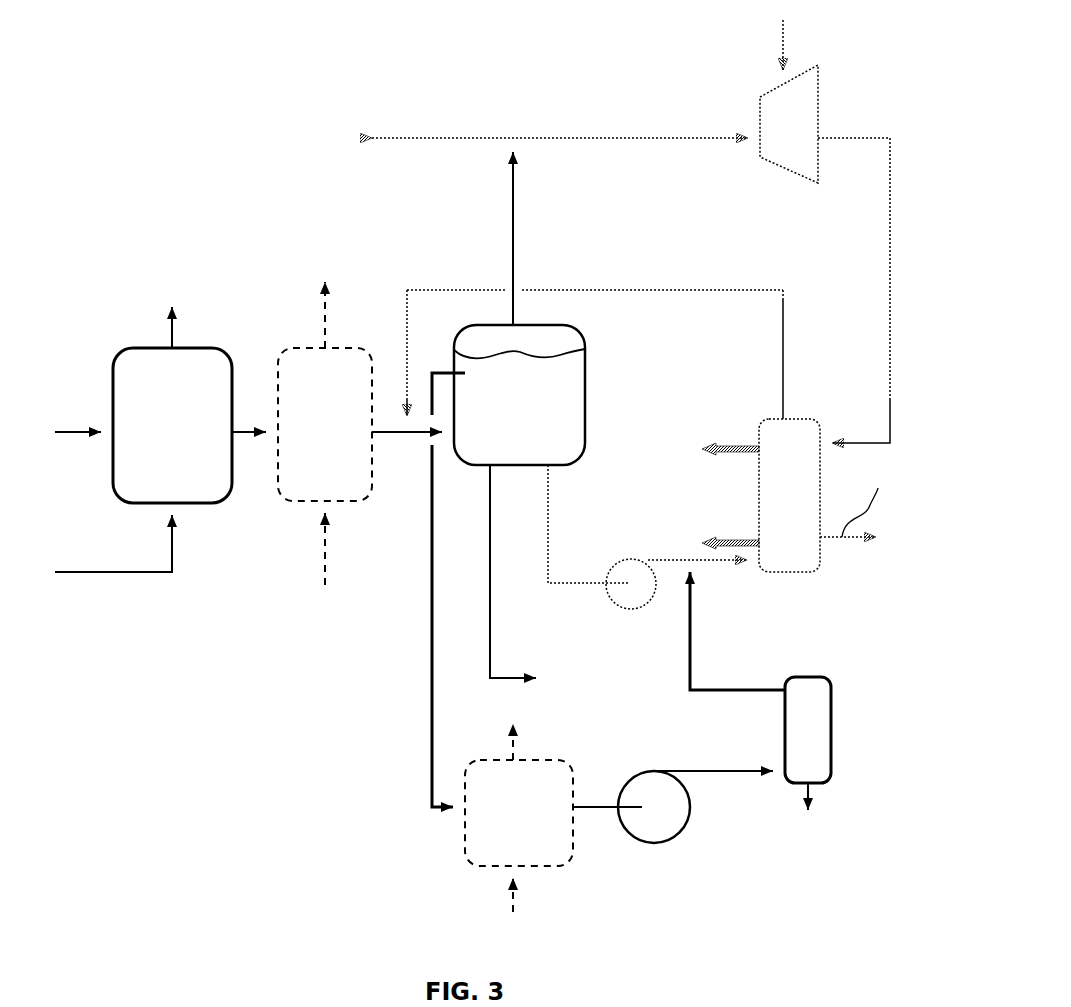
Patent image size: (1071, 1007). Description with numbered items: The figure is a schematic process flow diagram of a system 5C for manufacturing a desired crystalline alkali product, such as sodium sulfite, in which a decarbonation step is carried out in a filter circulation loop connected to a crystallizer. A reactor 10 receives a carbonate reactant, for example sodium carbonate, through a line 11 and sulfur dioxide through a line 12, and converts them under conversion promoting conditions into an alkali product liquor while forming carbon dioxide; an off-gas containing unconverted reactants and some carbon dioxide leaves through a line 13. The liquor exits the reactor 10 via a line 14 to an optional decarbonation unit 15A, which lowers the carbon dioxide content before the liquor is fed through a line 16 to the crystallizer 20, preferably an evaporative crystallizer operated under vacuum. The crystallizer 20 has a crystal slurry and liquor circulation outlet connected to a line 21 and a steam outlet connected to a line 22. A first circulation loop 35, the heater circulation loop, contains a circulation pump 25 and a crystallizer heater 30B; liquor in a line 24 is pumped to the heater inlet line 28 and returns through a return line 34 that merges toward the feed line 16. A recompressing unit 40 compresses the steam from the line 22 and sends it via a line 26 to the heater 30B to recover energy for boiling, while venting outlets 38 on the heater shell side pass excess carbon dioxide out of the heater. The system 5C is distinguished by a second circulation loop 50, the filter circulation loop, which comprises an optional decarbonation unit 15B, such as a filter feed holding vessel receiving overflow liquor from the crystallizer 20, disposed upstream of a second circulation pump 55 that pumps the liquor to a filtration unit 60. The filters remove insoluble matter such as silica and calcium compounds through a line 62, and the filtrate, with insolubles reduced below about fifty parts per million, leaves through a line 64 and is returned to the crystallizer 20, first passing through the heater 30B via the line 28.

The system 5C is at (222, 770).
The reactor 10 is at (172, 425).
The line 11 is at (90, 428).
The line 12 is at (114, 572).
The line 13 is at (172, 338).
The line 14 is at (240, 434).
The decarbonation unit 15A is at (325, 433).
The decarbonation unit 15B is at (519, 818).
The line 16 is at (398, 428).
The crystallizer 20 is at (519, 395).
The line 21 is at (490, 595).
The line 22 is at (513, 245).
The line 24 is at (548, 477).
The circulation pump 25 is at (642, 606).
The line 26 is at (853, 443).
The line 28 is at (712, 563).
The crystallizer heater 30B is at (818, 495).
The return line 34 is at (785, 313).
The first circulation loop 35 is at (641, 274).
The venting outlets 38 is at (750, 456).
The recompressing unit 40 is at (825, 231).
The second circulation loop 50 is at (409, 677).
The circulation pump 55 is at (666, 820).
The filtration unit 60 is at (808, 730).
The line 62 is at (812, 795).
The line 64 is at (690, 665).